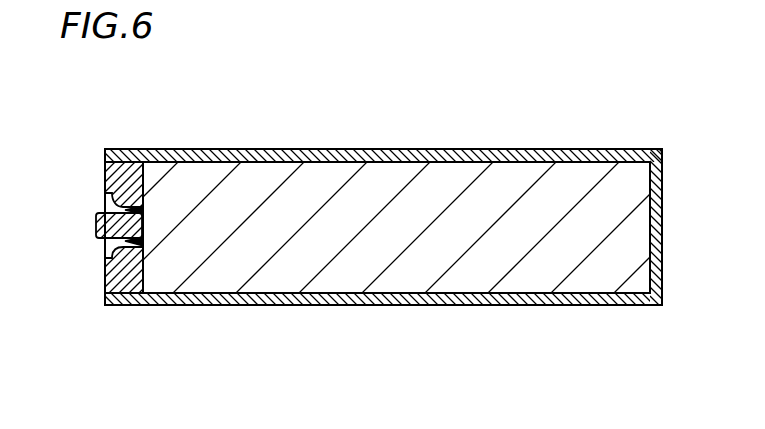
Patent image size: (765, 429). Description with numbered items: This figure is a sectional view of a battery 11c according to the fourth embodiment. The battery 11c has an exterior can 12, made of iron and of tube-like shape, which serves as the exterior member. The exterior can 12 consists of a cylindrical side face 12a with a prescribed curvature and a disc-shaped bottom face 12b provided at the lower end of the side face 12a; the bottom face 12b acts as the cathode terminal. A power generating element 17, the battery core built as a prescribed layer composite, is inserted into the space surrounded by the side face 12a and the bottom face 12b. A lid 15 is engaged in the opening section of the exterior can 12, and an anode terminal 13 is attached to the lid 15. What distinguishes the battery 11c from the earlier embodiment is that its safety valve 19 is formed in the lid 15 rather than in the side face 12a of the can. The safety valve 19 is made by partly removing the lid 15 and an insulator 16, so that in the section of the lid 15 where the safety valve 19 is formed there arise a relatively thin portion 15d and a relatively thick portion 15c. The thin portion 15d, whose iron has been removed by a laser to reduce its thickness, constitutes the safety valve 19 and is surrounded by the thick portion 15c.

The battery 11c is at (277, 131).
The exterior can 12 is at (500, 149).
The side face 12a is at (620, 306).
The bottom face 12b is at (664, 262).
The anode terminal 13 is at (96, 225).
The lid 15 is at (104, 172).
The relatively thick portion 15c is at (143, 292).
The relatively thin portion 15d is at (144, 257).
The insulator 16 is at (126, 242).
The power generating element 17 is at (588, 185).
The safety valve 19 is at (105, 202).